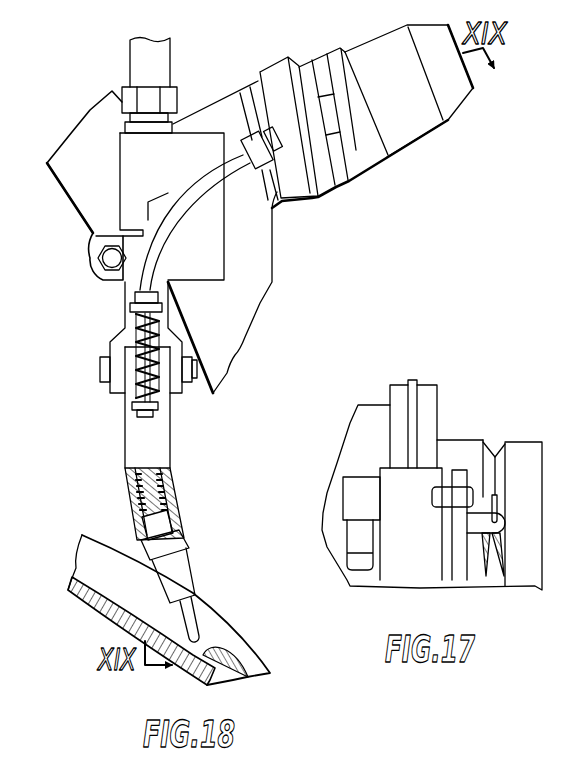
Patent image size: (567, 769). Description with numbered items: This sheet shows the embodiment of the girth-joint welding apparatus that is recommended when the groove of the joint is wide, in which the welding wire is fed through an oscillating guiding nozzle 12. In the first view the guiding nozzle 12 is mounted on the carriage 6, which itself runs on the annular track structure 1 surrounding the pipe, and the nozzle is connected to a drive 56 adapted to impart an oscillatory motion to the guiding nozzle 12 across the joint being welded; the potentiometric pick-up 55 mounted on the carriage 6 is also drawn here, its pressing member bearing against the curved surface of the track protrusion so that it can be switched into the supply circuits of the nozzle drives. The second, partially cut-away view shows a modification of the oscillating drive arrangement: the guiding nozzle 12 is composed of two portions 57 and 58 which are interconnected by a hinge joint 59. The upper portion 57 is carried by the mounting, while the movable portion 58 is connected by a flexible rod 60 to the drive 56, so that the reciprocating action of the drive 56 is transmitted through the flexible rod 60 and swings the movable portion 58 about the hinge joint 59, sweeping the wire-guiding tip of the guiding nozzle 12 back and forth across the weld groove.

In FIG. 17, the annular track structure 1 is at (427, 400).
In FIG. 17, the carriage 6 is at (388, 483).
In FIG. 17, the guiding nozzle 12 is at (490, 553).
In FIG. 18, the guiding nozzle 12 is at (174, 439).
In FIG. 17, the potentiometric pick-up 55 is at (457, 496).
In FIG. 18, the drive 56 is at (422, 123).
In FIG. 18, the portion of the guiding nozzle 57 is at (178, 347).
In FIG. 18, the movable portion of the guiding nozzle 58 is at (128, 500).
In FIG. 18, the hinge joint 59 is at (103, 372).
In FIG. 18, the flexible rod 60 is at (140, 318).